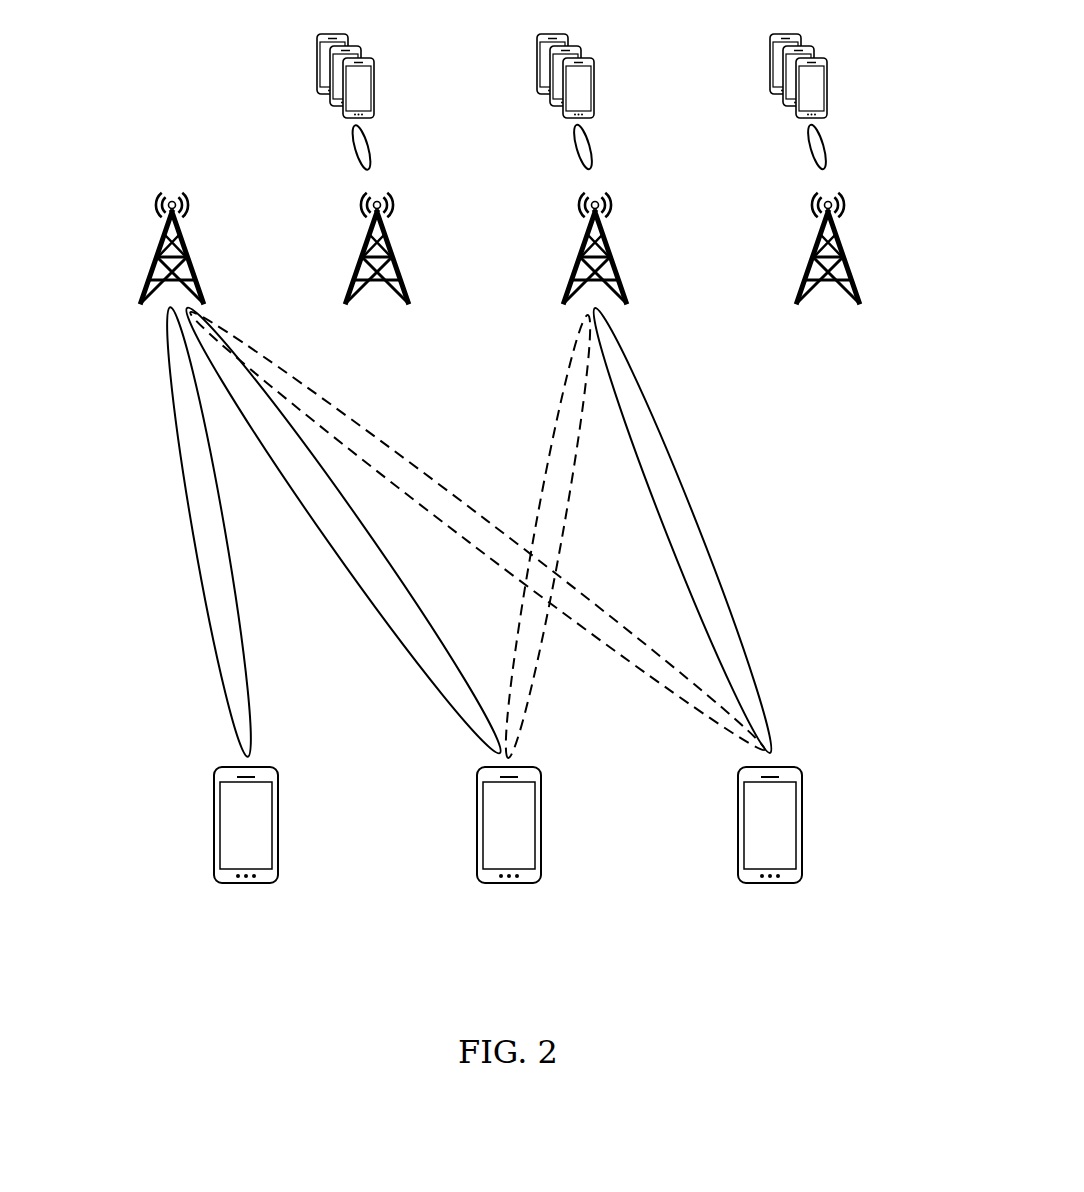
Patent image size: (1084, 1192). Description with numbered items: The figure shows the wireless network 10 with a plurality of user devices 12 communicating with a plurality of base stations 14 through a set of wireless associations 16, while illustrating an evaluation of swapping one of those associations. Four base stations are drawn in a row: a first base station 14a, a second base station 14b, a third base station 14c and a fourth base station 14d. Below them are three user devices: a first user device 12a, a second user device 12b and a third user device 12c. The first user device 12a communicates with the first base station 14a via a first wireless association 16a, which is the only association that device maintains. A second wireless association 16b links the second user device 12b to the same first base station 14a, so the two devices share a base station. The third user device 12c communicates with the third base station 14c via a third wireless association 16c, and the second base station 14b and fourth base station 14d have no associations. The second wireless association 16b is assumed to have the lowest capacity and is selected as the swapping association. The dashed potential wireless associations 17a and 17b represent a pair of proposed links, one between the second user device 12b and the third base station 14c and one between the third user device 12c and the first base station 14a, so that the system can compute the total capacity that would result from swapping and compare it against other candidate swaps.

The network 10 is at (168, 95).
The plurality of user devices 12 is at (282, 70).
The first user device 12a is at (245, 885).
The second user device 12b is at (507, 885).
The third user device 12c is at (768, 885).
The plurality of base stations 14 is at (513, 255).
The first base station 14a is at (173, 185).
The second base station 14b is at (376, 185).
The third base station 14c is at (595, 183).
The fourth base station 14d is at (828, 183).
The set of wireless associations 16 is at (328, 138).
The first wireless association 16a is at (228, 530).
The second wireless association 16b is at (330, 540).
The third wireless association 16c is at (698, 530).
The potential wireless association 17a is at (362, 417).
The potential wireless association 17b is at (527, 705).